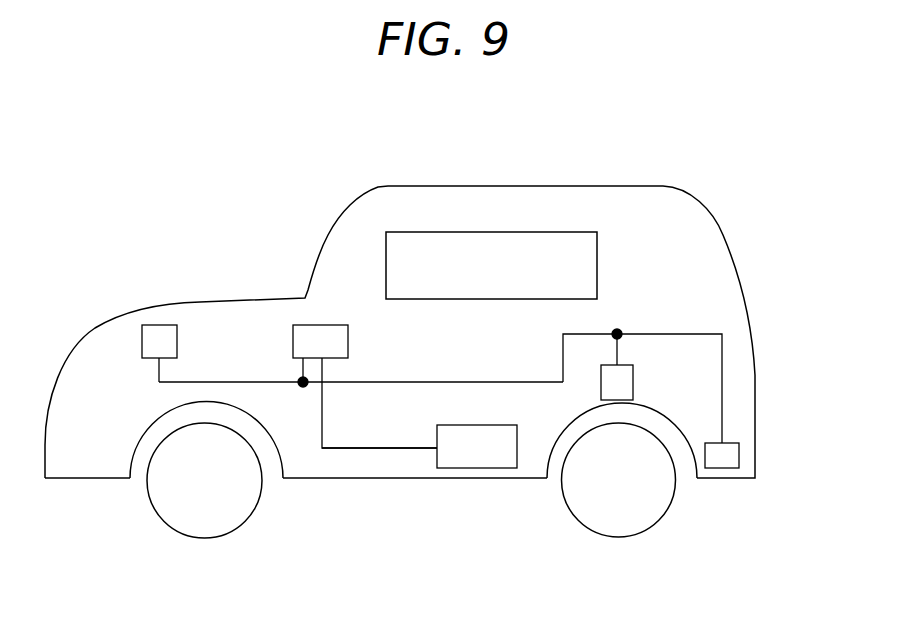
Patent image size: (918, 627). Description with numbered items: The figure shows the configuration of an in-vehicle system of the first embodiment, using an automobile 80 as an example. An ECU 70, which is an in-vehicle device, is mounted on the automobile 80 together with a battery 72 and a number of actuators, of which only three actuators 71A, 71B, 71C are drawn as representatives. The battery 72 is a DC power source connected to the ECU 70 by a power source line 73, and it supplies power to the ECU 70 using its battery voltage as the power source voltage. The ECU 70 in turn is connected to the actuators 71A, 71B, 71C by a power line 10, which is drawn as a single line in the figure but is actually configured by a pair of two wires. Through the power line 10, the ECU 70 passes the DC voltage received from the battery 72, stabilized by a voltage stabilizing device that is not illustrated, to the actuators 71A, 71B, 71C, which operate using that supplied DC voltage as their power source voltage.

The automobile 80 is at (717, 223).
The power line 10 is at (680, 333).
The ECU 70 is at (348, 342).
The actuator 71A is at (158, 325).
The actuator 71B is at (633, 390).
The actuator 71C is at (739, 455).
The battery 72 is at (477, 468).
The power source line 73 is at (378, 448).